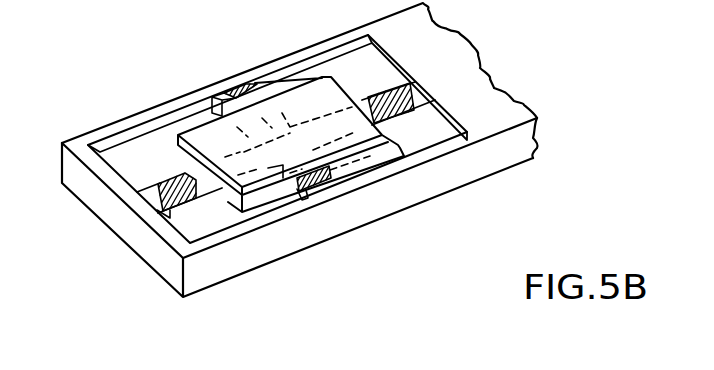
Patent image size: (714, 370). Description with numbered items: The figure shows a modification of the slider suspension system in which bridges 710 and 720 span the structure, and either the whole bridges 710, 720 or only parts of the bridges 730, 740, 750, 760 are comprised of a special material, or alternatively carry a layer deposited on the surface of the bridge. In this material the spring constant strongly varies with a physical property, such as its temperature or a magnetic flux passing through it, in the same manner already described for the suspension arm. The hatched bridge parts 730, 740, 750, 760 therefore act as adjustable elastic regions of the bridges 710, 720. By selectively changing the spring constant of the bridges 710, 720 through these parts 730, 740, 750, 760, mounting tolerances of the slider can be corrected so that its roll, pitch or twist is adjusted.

The bridge 710 is at (200, 185).
The bridge 720 is at (373, 165).
The part of bridge 730 is at (158, 184).
The part of bridge 740 is at (402, 100).
The part of bridge 750 is at (323, 186).
The part of bridge 760 is at (238, 90).